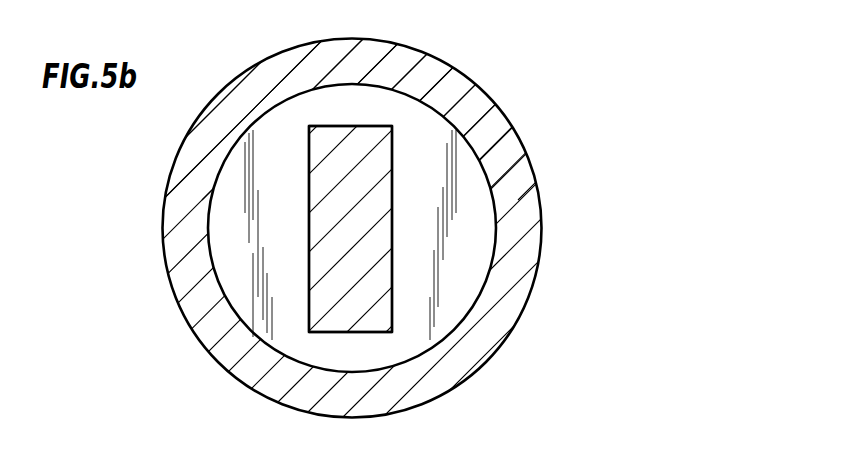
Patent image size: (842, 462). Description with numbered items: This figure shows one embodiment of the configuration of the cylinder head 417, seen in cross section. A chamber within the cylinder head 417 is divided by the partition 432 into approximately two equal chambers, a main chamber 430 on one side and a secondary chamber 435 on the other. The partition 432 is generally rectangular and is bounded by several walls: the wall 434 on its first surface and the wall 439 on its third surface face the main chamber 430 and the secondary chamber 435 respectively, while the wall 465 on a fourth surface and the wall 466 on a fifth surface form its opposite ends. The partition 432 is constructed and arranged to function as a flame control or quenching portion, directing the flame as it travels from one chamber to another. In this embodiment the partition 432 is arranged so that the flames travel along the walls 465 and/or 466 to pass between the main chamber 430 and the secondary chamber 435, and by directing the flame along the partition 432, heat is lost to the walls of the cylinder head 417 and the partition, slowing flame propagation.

The cylinder head 417 is at (643, 152).
The main chamber 430 is at (232, 229).
The partition 432 is at (373, 168).
The wall on a first surface 434 is at (308, 305).
The secondary chamber 435 is at (472, 243).
The wall on a third surface 439 is at (395, 267).
The wall on a fourth surface 465 is at (337, 125).
The wall on a fifth surface 466 is at (380, 332).